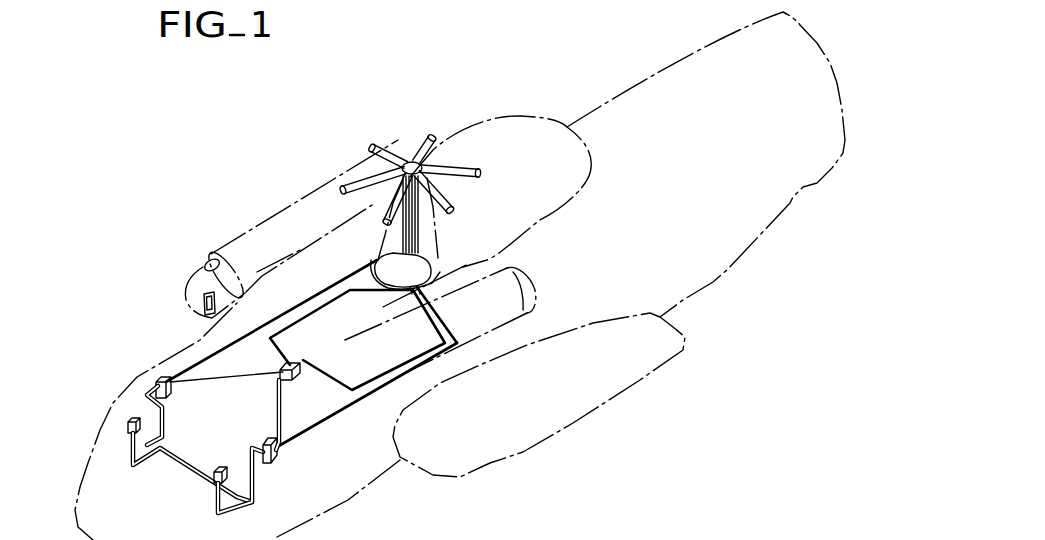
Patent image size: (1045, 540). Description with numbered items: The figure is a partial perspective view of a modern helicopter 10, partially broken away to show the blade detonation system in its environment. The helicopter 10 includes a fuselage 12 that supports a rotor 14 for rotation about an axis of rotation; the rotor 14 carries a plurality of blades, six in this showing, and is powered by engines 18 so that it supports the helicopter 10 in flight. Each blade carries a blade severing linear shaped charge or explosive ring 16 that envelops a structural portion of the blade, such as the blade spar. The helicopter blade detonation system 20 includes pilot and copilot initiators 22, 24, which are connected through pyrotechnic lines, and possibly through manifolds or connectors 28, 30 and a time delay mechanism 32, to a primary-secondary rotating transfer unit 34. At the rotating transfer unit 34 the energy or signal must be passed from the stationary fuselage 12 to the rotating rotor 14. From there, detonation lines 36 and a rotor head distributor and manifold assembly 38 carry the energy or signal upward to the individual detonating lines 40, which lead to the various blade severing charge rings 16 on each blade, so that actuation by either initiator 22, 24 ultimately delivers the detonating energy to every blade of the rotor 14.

The helicopter 10 is at (531, 76).
The fuselage 12 is at (720, 164).
The rotor 14 is at (407, 163).
The blade severing linear shaped charge or explosive ring 16 is at (433, 132).
The engines 18 is at (272, 222).
The helicopter blade detonation system 20 is at (302, 303).
The pilot initiator 22 is at (128, 427).
The copilot initiator 24 is at (213, 483).
The manifold or connector 28 is at (160, 377).
The manifold or connector 30 is at (277, 461).
The time delay mechanism 32 is at (297, 380).
The primary-secondary rotating transfer unit 34 is at (420, 262).
The detonation lines 36 is at (445, 232).
The rotor head distributor and manifold assembly 38 is at (408, 160).
The individual detonating lines 40 is at (452, 164).